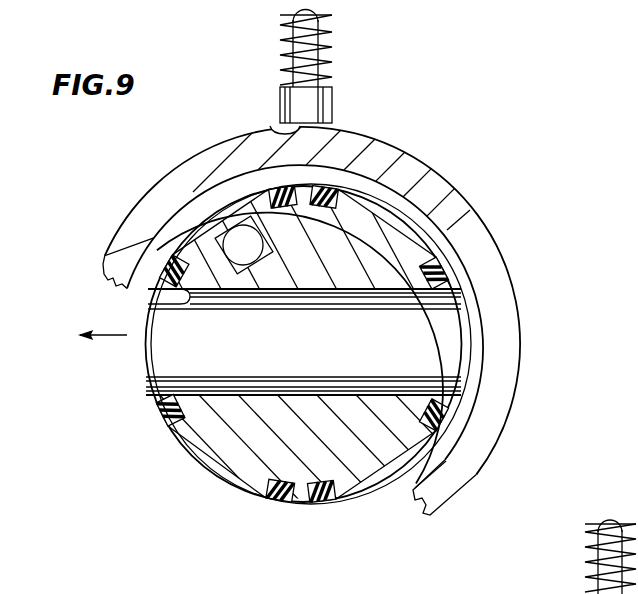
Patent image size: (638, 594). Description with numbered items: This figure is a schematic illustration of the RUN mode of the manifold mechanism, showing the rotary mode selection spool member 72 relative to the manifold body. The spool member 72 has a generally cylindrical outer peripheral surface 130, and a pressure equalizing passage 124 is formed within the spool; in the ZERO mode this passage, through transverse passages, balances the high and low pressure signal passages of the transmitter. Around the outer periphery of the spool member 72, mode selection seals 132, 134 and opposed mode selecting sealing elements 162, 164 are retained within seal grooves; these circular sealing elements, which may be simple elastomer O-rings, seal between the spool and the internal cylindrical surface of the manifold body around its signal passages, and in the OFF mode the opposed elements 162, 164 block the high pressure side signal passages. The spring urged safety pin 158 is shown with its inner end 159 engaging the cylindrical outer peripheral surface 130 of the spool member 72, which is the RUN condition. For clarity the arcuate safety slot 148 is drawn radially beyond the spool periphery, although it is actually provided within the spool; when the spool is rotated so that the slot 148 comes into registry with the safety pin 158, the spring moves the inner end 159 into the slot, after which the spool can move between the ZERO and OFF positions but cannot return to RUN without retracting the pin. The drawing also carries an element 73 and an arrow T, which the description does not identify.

The rotary mode selection spool member 72 is at (243, 450).
The shaft 73 is at (150, 301).
The pressure equalizing passage 124 is at (245, 258).
The cylindrical outer peripheral surface 130 is at (152, 183).
The mode selection seal 132 is at (328, 501).
The mode selection seal 134 is at (150, 268).
The arcuate safety slot 148 is at (487, 253).
The safety pin 158 is at (280, 58).
The inner end of the safety pin 159 is at (268, 127).
The opposed mode selecting sealing element 162 is at (165, 413).
The opposed mode selecting sealing element 164 is at (325, 186).
The direction T is at (103, 347).